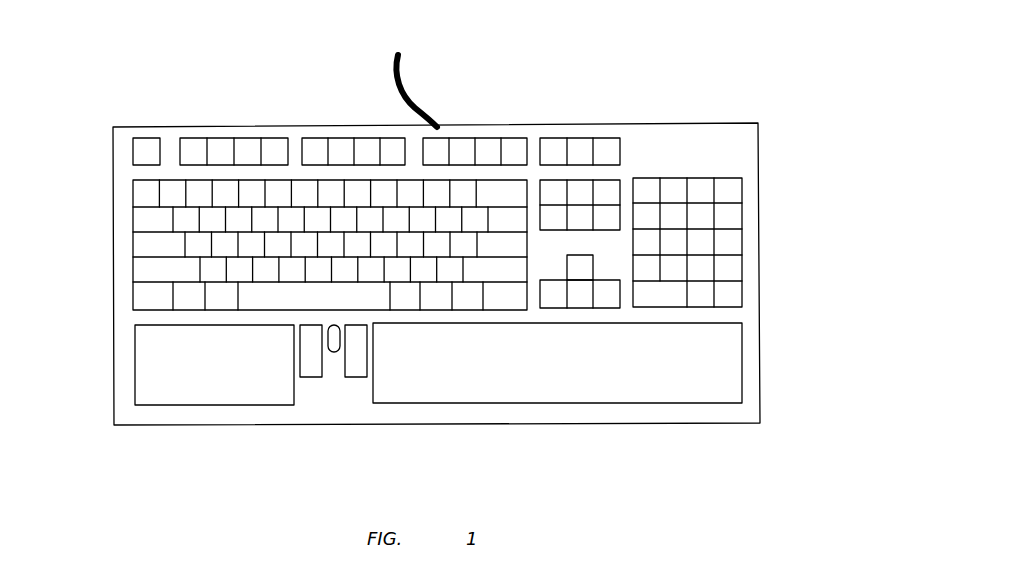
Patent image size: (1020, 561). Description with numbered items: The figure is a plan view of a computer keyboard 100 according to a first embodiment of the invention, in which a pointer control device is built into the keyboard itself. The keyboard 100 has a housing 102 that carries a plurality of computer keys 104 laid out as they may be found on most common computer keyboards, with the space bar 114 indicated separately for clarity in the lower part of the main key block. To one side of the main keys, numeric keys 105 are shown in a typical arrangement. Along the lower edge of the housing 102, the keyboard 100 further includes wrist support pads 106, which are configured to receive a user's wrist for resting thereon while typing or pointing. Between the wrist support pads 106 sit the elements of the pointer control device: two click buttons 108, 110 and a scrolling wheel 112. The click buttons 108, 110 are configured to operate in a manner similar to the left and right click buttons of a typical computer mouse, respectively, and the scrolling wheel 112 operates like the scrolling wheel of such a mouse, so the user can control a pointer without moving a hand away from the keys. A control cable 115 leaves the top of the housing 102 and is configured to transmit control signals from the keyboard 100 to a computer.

The keyboard 100 is at (489, 215).
The housing 102 is at (650, 128).
The computer keys 104 is at (316, 143).
The numeric keys 105 is at (677, 192).
The wrist support pads 106 is at (203, 376).
The click button 108 is at (309, 373).
The click button 110 is at (353, 368).
The scrolling wheel 112 is at (333, 352).
The space bar 114 is at (305, 307).
The control cable 115 is at (403, 80).